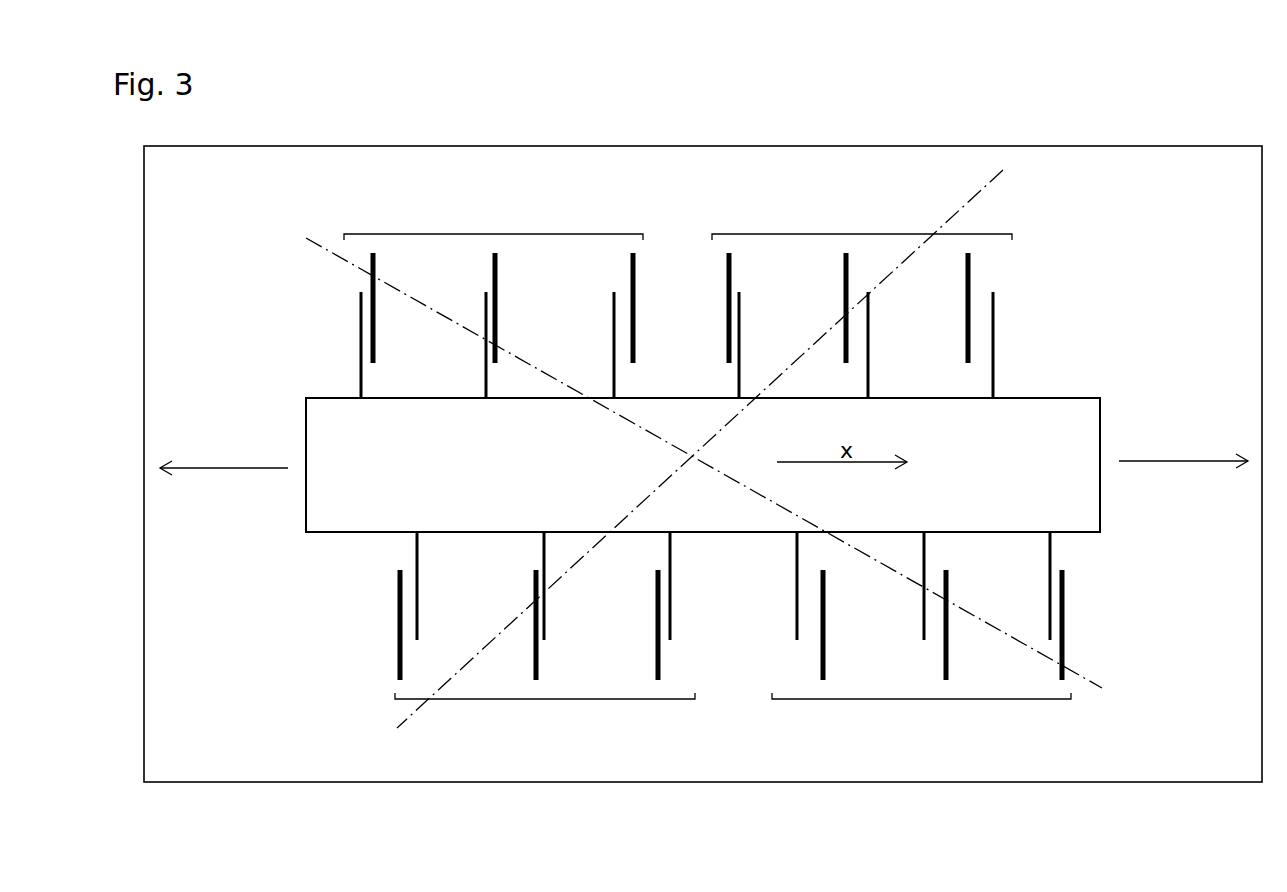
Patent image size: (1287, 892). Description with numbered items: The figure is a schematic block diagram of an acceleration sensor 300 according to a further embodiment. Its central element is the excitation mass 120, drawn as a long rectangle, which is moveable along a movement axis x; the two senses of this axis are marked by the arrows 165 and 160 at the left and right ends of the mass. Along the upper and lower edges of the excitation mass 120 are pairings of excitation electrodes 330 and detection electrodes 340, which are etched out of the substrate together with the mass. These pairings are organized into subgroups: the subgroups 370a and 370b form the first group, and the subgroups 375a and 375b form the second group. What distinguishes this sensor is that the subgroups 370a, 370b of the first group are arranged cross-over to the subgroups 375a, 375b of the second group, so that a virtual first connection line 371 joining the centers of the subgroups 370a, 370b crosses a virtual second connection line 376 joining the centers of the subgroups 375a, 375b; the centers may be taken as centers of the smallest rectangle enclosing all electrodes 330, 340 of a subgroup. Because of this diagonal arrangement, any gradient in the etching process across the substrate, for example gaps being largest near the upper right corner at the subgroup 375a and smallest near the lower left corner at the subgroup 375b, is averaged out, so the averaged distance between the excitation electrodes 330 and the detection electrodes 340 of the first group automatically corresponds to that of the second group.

The acceleration sensor 300 is at (703, 124).
The excitation mass 120 is at (1048, 398).
The excitation electrodes 330 is at (996, 360).
The detection electrodes 340 is at (846, 270).
The subgroup of the first group 370a is at (495, 232).
The subgroup of the second group 375a is at (860, 230).
The subgroup of the second group 375b is at (543, 703).
The subgroup of the first group 370b is at (920, 705).
The virtual first connection line 371 is at (333, 255).
The second diagonal axis 376 is at (962, 208).
The first transport direction 165 is at (266, 466).
The second transport direction 160 is at (1218, 464).